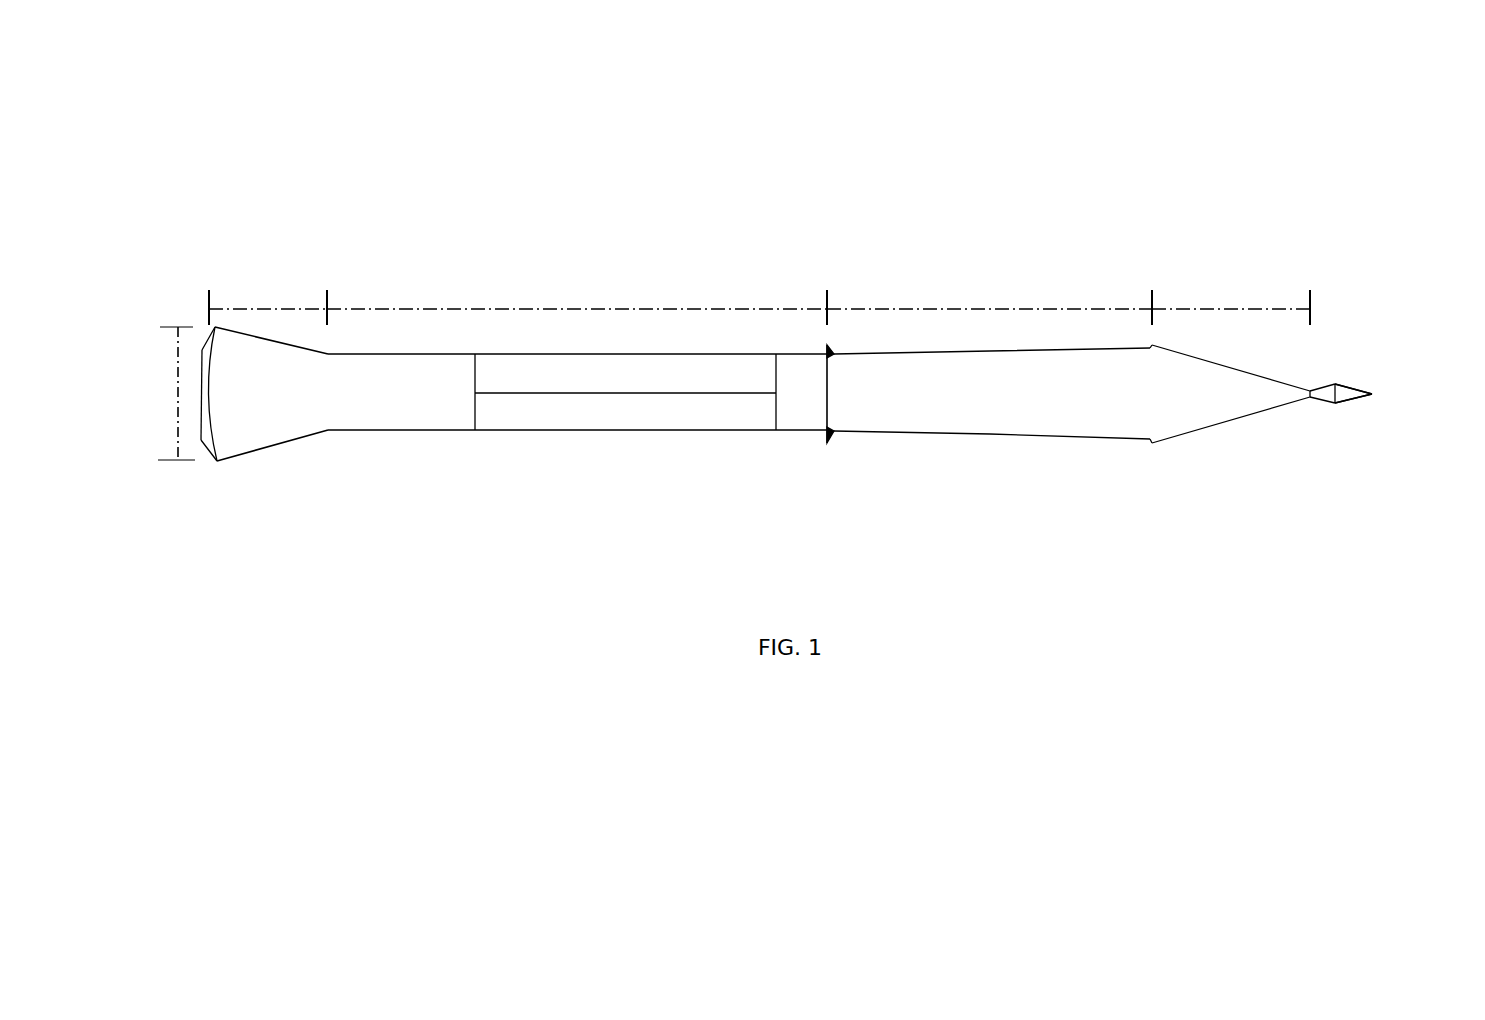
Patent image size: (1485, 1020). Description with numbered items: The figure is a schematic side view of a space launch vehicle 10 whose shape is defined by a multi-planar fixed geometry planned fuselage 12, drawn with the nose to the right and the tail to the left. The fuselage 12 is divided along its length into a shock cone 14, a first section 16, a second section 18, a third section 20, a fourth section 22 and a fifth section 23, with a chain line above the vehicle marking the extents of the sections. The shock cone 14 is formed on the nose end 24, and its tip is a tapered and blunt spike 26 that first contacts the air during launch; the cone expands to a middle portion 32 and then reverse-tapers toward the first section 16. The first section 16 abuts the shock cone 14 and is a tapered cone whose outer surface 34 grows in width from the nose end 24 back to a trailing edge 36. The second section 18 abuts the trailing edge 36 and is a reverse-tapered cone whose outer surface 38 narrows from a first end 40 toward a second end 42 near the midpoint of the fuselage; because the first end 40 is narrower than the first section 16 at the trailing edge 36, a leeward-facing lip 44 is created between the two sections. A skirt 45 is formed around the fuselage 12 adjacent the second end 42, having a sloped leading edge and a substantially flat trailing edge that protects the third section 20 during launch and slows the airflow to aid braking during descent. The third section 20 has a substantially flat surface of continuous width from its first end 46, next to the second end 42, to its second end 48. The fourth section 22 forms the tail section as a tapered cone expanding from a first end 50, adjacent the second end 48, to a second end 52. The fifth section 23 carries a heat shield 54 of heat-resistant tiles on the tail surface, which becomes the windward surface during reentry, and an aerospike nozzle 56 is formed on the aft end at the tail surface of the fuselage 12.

The space launch vehicle 10 is at (855, 220).
The multi-planar fixed geometry planned fuselage 12 is at (697, 432).
The shock cone 14 is at (1347, 385).
The first section 16 is at (1230, 308).
The second section 18 is at (1002, 308).
The third section 20 is at (587, 308).
The fourth section 22 is at (278, 308).
The fifth section 23 is at (178, 345).
The nose end 24 is at (1370, 394).
The tapered and blunt spike 26 is at (1370, 396).
The middle portion 32 is at (1333, 404).
The outer surface 34 is at (1240, 421).
The trailing edge 36 is at (1152, 444).
The outer surface 38 is at (990, 435).
The first end 40 is at (1140, 347).
The second end 42 is at (862, 432).
The leeward-facing lip 44 is at (1150, 440).
The skirt 45 is at (827, 445).
The first end 46 is at (793, 432).
The second end 48 is at (373, 432).
The first end 50 is at (314, 433).
The second end 52 is at (217, 462).
The heat shield 54 is at (203, 390).
The aerospike nozzle 56 is at (202, 442).